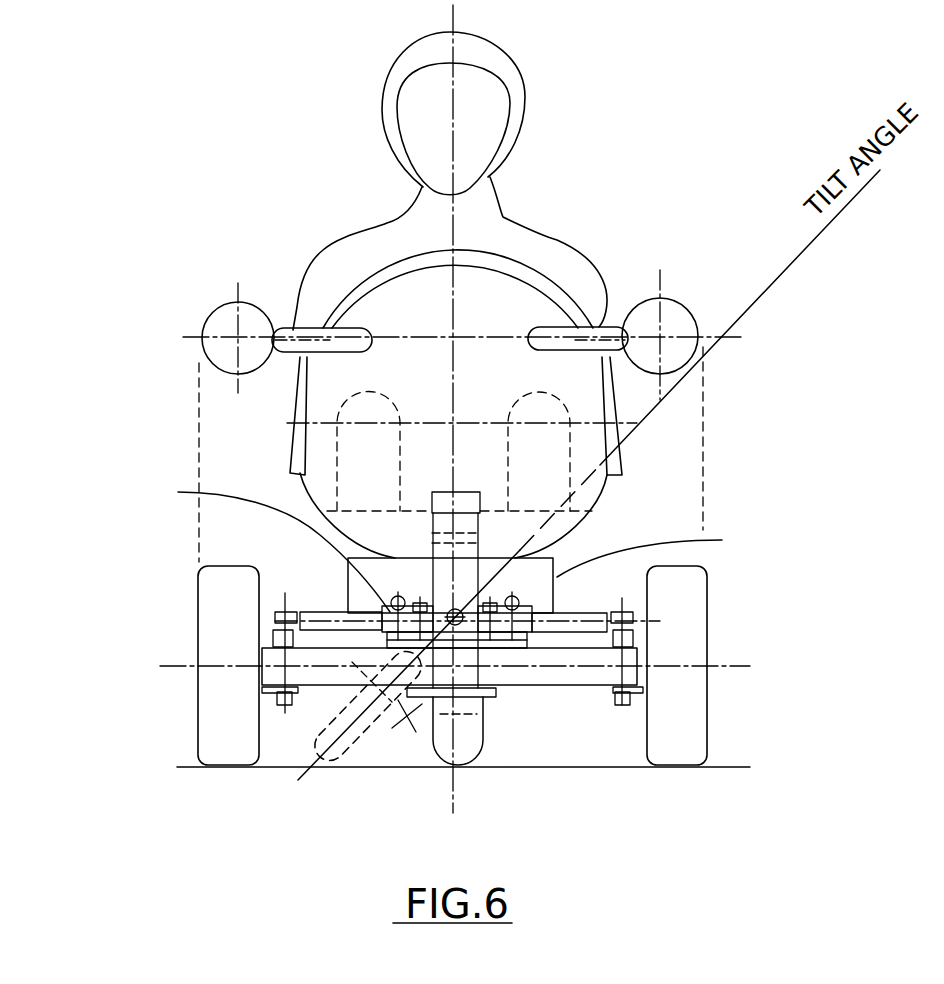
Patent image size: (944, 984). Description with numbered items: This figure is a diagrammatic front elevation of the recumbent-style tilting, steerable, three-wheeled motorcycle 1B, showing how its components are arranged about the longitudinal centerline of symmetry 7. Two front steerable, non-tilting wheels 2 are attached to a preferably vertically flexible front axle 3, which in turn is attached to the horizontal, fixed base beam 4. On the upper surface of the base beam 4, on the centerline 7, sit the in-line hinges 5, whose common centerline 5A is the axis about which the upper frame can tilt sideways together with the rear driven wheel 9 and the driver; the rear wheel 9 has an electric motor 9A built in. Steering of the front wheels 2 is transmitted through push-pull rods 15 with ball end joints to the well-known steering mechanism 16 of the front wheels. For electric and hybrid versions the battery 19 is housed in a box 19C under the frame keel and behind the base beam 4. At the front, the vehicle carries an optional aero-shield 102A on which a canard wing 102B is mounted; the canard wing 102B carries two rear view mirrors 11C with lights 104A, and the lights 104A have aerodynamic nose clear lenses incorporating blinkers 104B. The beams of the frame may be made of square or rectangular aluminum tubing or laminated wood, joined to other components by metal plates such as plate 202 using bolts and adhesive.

The motorcycle 1B is at (582, 849).
The front steerable non-tilting wheels 2 is at (197, 607).
The front axle 3 is at (558, 687).
The base beam 4 is at (458, 700).
The hinges 5 is at (355, 522).
The hinges' centerline 5A is at (453, 613).
The longitudinal centerline of symmetry 7 is at (453, 224).
The rear driven wheel 9 is at (369, 741).
The electric motor 9A is at (428, 742).
The rear view mirrors 11C is at (205, 312).
The push-pull rods 15 is at (259, 549).
The steering mechanism 16 is at (323, 612).
The battery 19 is at (695, 554).
The box 19C is at (695, 554).
The aero-shield 102A is at (540, 270).
The canard wing 102B is at (312, 330).
The lights 104A is at (443, 289).
The blinkers 104B is at (200, 348).
The metal plate 202 is at (487, 697).